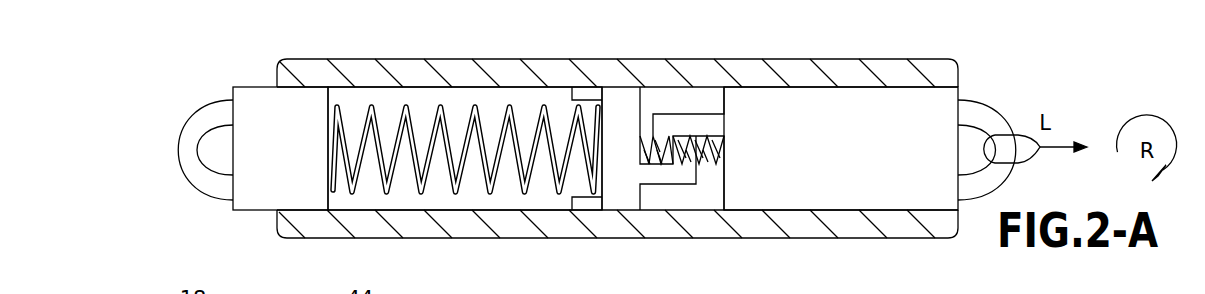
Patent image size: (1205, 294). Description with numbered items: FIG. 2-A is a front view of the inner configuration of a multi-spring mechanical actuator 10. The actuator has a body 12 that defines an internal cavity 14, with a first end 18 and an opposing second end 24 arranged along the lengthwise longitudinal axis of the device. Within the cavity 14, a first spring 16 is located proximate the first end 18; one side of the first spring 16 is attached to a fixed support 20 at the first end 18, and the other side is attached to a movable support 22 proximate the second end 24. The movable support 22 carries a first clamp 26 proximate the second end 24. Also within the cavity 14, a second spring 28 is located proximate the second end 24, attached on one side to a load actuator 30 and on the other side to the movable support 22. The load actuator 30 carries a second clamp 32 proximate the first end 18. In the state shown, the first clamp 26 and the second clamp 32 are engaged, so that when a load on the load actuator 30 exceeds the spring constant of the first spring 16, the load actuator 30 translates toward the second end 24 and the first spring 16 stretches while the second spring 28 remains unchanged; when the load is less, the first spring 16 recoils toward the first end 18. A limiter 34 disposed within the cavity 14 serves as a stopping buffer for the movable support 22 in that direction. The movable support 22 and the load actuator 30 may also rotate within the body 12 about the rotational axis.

The multi-spring mechanical actuator 10 is at (140, 131).
The body 12 is at (478, 223).
The cavity 14 is at (343, 97).
The first spring 16 is at (372, 122).
The first end 18 is at (250, 60).
The fixed support 20 is at (266, 163).
The movable support 22 is at (627, 165).
The second end 24 is at (976, 61).
The first clamp 26 is at (665, 178).
The second spring 28 is at (702, 160).
The load actuator 30 is at (829, 159).
The second clamp 32 is at (673, 125).
The limiter 34 is at (587, 93).